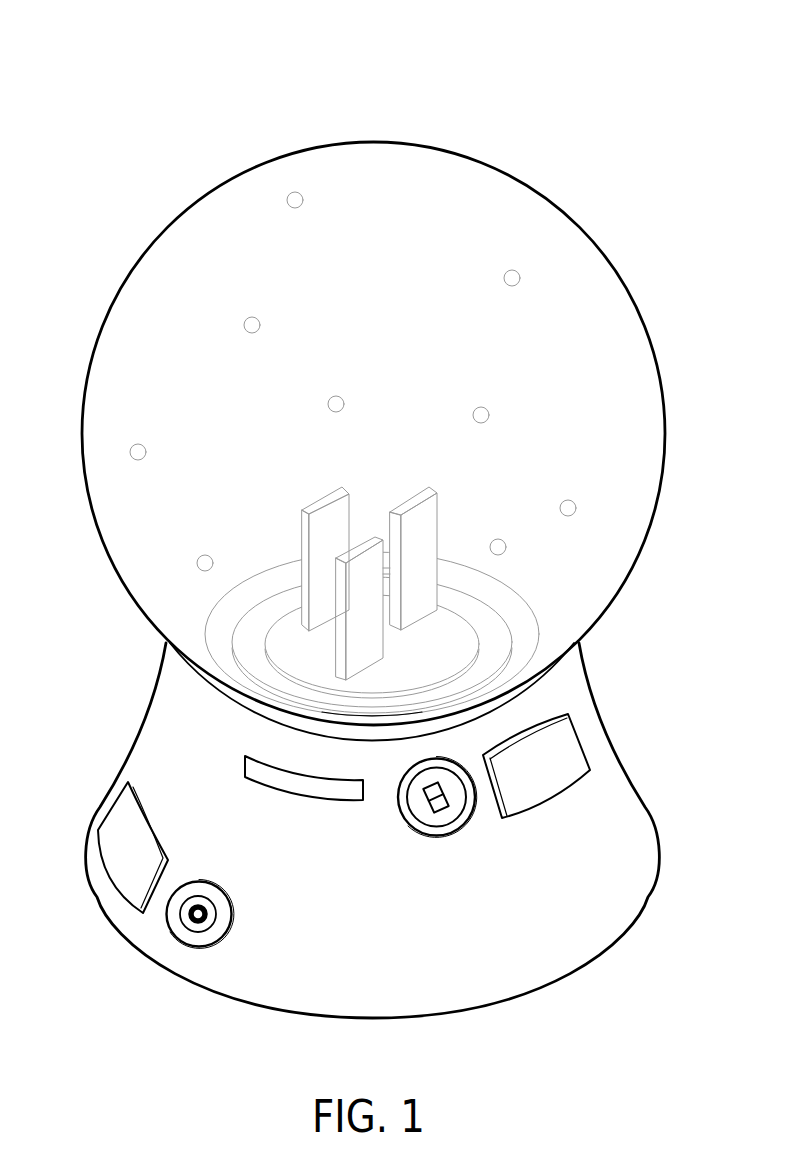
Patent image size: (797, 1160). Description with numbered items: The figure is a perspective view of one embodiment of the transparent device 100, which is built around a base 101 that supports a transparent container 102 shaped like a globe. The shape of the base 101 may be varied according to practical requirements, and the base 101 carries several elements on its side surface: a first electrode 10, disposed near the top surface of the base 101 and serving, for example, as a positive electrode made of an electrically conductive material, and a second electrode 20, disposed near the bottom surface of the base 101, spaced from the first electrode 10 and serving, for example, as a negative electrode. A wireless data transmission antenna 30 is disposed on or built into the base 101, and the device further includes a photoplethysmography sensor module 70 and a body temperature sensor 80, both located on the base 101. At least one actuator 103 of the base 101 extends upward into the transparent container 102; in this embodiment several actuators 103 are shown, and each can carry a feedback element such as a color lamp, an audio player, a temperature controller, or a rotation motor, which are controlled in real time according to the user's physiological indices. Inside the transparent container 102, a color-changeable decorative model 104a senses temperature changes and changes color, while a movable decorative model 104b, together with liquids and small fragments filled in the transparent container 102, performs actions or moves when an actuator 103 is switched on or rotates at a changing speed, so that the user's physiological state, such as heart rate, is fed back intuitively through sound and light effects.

The transparent device 100 is at (102, 41).
The base 101 is at (250, 970).
The transparent container 102 is at (485, 203).
The actuator 103 is at (323, 525).
The color-changeable decorative model 104a is at (577, 508).
The decorative model 104b is at (521, 278).
The first electrode 10 is at (563, 752).
The second electrode 20 is at (118, 851).
The wireless data transmission antenna 30 is at (245, 767).
The photoplethysmography (PPG) sensor module 70 is at (443, 818).
The body temperature sensor 80 is at (178, 925).